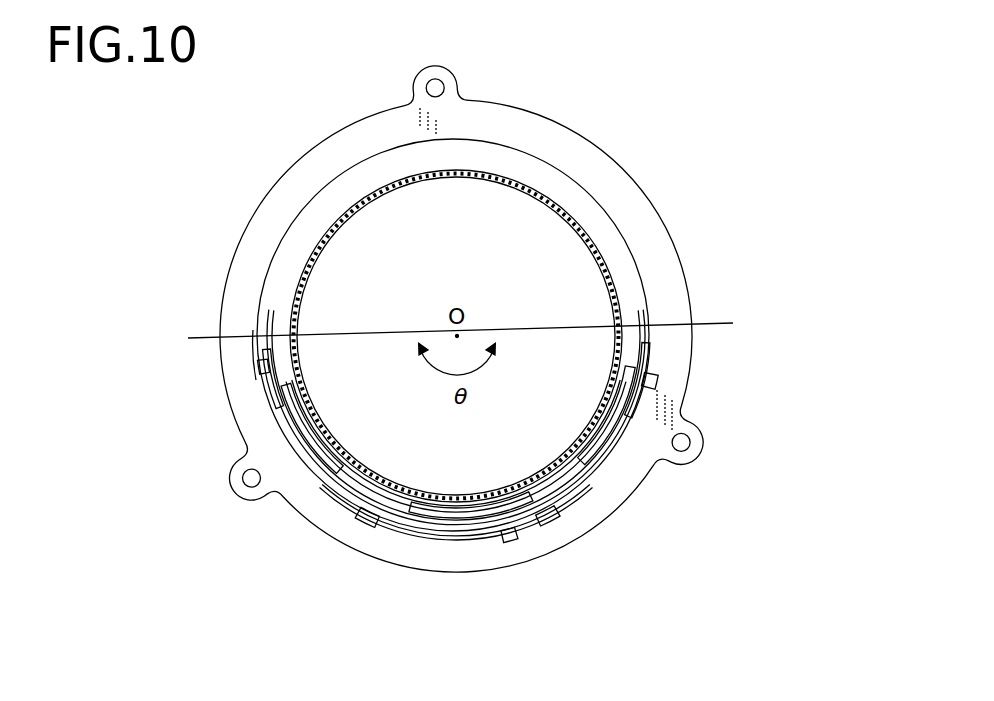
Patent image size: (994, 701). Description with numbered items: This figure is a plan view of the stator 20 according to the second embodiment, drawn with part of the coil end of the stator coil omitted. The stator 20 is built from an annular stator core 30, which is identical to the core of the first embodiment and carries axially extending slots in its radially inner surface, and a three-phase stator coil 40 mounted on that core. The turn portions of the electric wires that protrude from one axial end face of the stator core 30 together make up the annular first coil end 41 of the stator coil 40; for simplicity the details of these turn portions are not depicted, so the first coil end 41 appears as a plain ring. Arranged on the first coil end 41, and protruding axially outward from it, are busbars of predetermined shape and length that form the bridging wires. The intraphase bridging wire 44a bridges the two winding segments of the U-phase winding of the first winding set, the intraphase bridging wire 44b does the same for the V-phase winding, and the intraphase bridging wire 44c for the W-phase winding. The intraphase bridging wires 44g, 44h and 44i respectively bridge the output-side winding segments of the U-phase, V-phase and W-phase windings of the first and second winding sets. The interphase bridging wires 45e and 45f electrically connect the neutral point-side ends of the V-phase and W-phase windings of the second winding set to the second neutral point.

The stator 20 is at (668, 161).
The stator core 30 is at (238, 232).
The stator coil 40 is at (351, 165).
The first coil end 41 is at (322, 205).
The intraphase bridging wire 44a is at (622, 422).
The intraphase bridging wire 44b is at (459, 500).
The intraphase bridging wire 44c is at (297, 441).
The intraphase bridging wire 44g is at (630, 445).
The intraphase bridging wire 44h is at (435, 540).
The intraphase bridging wire 44i is at (262, 378).
The interphase bridging wire 45e is at (553, 521).
The interphase bridging wire 45f is at (362, 522).